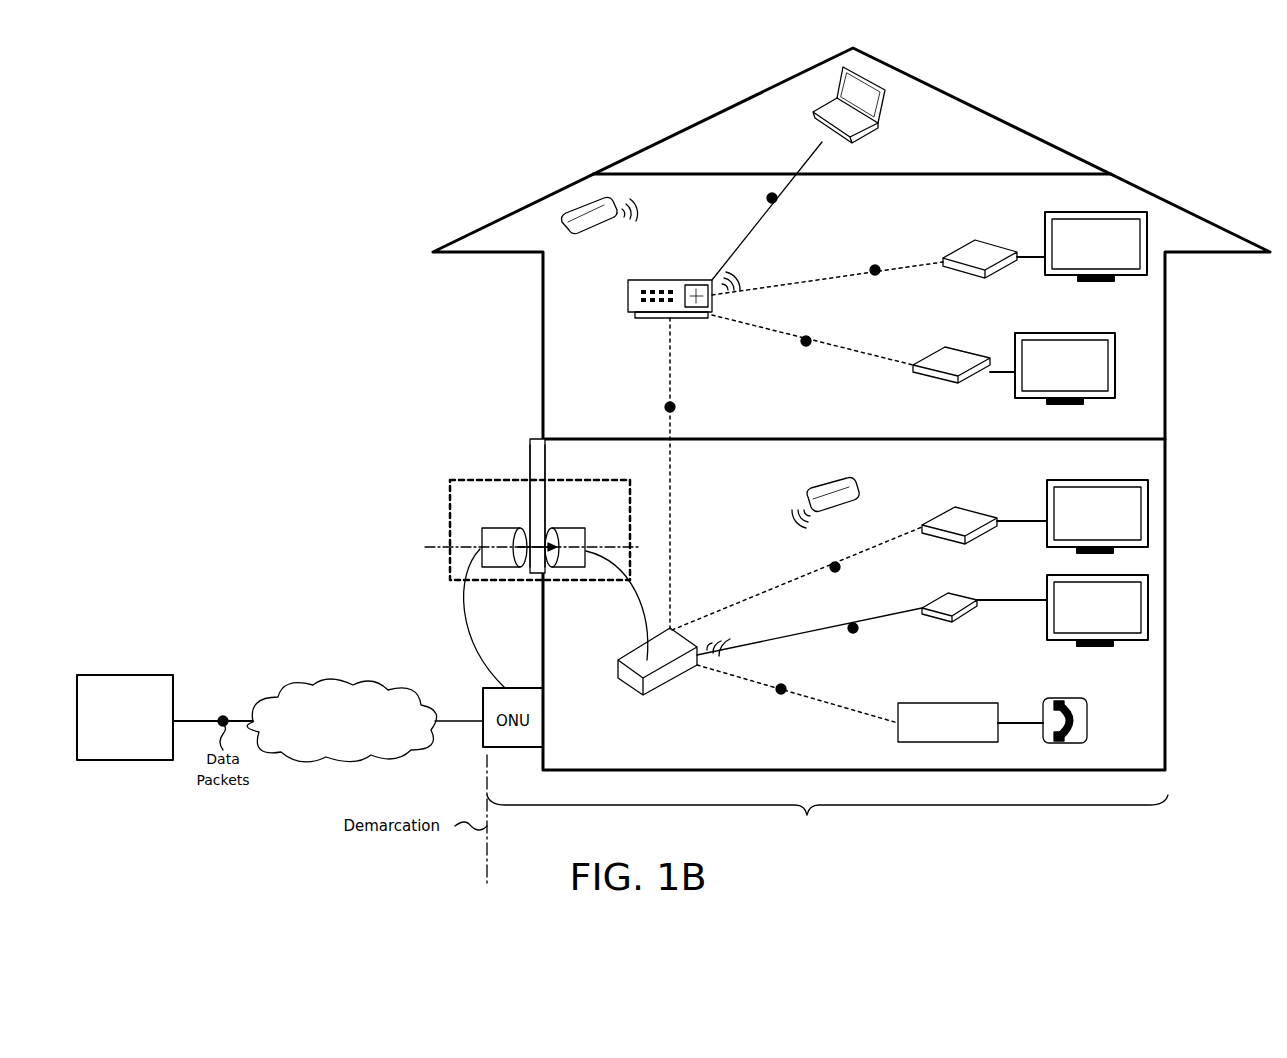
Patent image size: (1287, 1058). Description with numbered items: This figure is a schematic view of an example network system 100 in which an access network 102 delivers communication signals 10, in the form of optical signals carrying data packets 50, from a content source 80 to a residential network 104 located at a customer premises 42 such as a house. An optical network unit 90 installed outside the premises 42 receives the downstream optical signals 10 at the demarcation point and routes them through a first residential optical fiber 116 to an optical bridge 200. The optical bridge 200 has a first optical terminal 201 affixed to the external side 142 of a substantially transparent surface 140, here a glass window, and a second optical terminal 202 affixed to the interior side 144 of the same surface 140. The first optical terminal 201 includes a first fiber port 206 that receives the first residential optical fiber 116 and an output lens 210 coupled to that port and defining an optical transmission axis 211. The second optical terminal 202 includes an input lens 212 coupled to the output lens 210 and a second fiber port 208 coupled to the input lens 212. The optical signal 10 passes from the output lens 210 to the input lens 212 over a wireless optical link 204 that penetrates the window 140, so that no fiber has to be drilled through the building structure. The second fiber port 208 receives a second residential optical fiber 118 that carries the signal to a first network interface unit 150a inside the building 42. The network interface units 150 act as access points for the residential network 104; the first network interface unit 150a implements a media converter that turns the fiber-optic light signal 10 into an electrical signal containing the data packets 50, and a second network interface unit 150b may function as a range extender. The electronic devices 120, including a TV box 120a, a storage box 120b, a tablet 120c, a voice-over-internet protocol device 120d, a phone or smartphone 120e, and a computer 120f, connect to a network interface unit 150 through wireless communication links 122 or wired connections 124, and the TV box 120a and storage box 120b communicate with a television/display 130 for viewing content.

The communication signals 10 is at (531, 665).
The customer premises 42 is at (1101, 165).
The data packets 50 is at (223, 718).
The content source 80 is at (129, 763).
The optical network unit 90 is at (488, 705).
The network system 100 is at (358, 177).
The access network 102 is at (357, 687).
The residential network 104 is at (827, 819).
The first residential optical fiber 116 is at (470, 606).
The second residential optical fiber 118 is at (642, 602).
The electronic devices 120 is at (857, 405).
The TV box 120a is at (955, 637).
The storage box 120b is at (937, 507).
The tablet 120c is at (824, 479).
The voice-over-internet protocol device 120d is at (947, 703).
The phone or smartphone 120e is at (594, 229).
The computer 120f is at (885, 106).
The wireless communication link 122 is at (833, 285).
The wired connection 124 is at (762, 222).
The television/display 130 is at (1128, 275).
The substantially transparent surface 140 is at (531, 436).
The external side 142 is at (529, 452).
The interior side 144 is at (546, 450).
The network interface unit 150 is at (679, 497).
The first network interface unit 150a is at (650, 697).
The second network interface unit 150b is at (668, 280).
The optical bridge 200 is at (470, 480).
The first optical terminal 201 is at (495, 528).
The second optical terminal 202 is at (580, 528).
The wireless optical link 204 is at (545, 553).
The first fiber port 206 is at (482, 544).
The second fiber port 208 is at (586, 543).
The output lens 210 is at (503, 528).
The optical transmission axis 211 is at (505, 565).
The input lens 212 is at (575, 528).